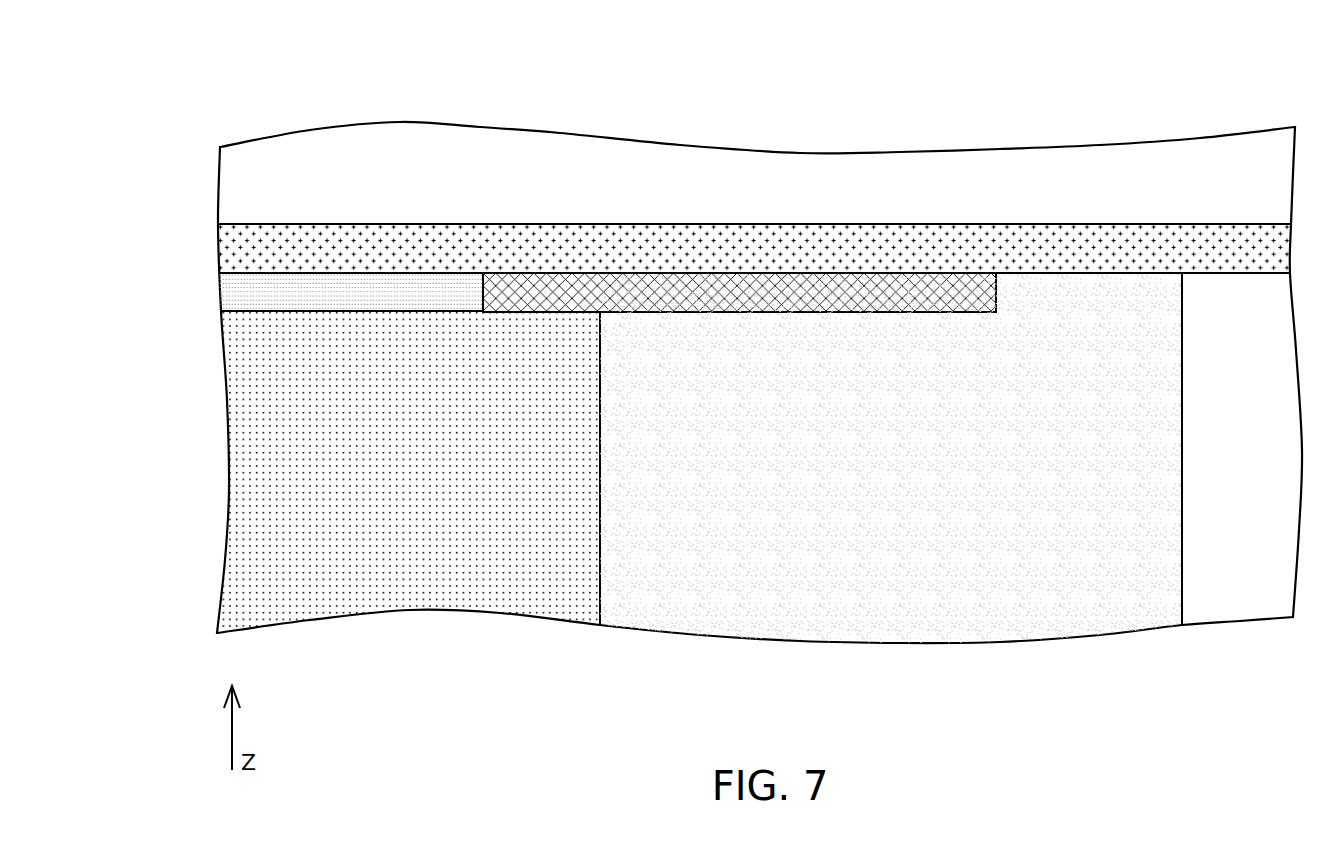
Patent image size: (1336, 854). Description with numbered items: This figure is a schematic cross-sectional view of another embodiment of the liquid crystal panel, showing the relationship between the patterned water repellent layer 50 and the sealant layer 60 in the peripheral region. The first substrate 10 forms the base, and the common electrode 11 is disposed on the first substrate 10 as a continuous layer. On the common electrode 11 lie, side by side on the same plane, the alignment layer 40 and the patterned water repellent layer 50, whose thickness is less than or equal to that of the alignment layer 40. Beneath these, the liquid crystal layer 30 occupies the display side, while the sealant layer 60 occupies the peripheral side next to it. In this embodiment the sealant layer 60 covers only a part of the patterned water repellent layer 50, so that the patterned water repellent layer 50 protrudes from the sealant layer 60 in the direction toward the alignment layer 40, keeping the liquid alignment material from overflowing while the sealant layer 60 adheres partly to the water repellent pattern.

The first substrate 10 is at (435, 158).
The common electrode 11 is at (312, 248).
The liquid crystal layer 30 is at (450, 573).
The alignment layer 40 is at (315, 298).
The patterned water repellent layer 50 is at (742, 273).
The sealant layer 60 is at (916, 500).